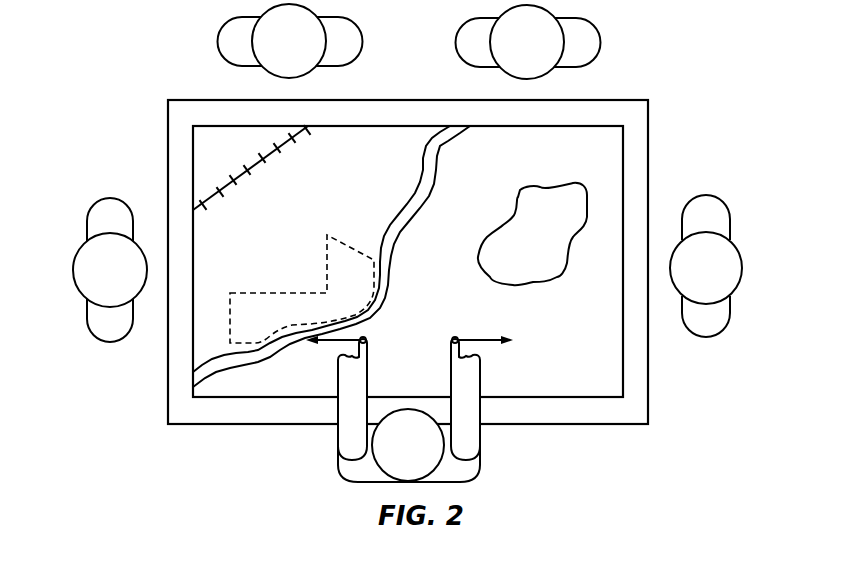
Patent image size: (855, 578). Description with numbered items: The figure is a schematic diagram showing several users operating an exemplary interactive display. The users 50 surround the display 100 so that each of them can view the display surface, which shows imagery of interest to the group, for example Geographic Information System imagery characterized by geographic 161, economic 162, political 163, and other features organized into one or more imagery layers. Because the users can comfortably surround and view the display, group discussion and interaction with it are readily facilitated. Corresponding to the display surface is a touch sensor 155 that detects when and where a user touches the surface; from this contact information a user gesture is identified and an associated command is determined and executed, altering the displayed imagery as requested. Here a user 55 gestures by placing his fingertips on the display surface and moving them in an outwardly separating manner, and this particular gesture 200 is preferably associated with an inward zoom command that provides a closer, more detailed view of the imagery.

The display 100 is at (150, 67).
The touch sensor 155 is at (612, 147).
The geographic feature 161 is at (530, 185).
The economic feature 162 is at (256, 166).
The political feature 163 is at (304, 293).
The gesture 200 is at (487, 338).
The users 50 is at (84, 187).
The user 55 is at (478, 468).